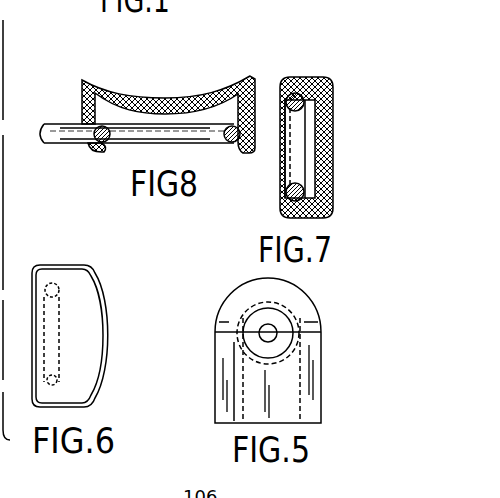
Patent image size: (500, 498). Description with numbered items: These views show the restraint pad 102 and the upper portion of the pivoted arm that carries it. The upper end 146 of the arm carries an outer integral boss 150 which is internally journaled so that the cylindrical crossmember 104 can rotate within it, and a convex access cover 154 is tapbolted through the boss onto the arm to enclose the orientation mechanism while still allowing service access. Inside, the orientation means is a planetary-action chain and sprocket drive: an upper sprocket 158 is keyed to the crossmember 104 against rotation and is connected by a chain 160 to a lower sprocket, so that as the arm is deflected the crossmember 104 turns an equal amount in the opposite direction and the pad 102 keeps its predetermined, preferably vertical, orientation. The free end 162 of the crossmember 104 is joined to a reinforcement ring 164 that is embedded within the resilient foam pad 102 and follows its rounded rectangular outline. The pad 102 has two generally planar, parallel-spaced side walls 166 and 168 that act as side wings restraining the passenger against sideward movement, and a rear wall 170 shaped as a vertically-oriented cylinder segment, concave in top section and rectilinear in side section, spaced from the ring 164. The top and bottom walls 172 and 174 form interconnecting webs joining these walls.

In FIG. 8, the restraint pad 102 is at (174, 100).
In FIG. 7, the restraint pad 102 is at (312, 78).
In FIG. 6, the restraint pad 102 is at (110, 338).
In FIG. 5, the crossmember 104 is at (276, 338).
In FIG. 5, the upper end of the pivoted arm 146 is at (312, 380).
In FIG. 5, the outer integral boss 150 is at (270, 314).
In FIG. 5, the convex access cover 154 is at (316, 303).
In FIG. 5, the upper sprocket 158 is at (305, 360).
In FIG. 5, the chain 160 is at (303, 408).
In FIG. 8, the free end of the crossmember 162 is at (64, 142).
In FIG. 6, the free end of the crossmember 162 is at (63, 327).
In FIG. 8, the reinforcement ring 164 is at (210, 142).
In FIG. 7, the reinforcement ring 164 is at (285, 196).
In FIG. 6, the reinforcement ring 164 is at (66, 290).
In FIG. 8, the side wall 166 is at (82, 104).
In FIG. 8, the side wall 168 is at (250, 80).
In FIG. 6, the side wall 168 is at (92, 351).
In FIG. 8, the rear wall 170 is at (136, 97).
In FIG. 7, the rear wall 170 is at (333, 134).
In FIG. 7, the top wall 172 is at (324, 80).
In FIG. 6, the top wall 172 is at (58, 265).
In FIG. 7, the bottom wall 174 is at (326, 212).
In FIG. 6, the bottom wall 174 is at (62, 407).